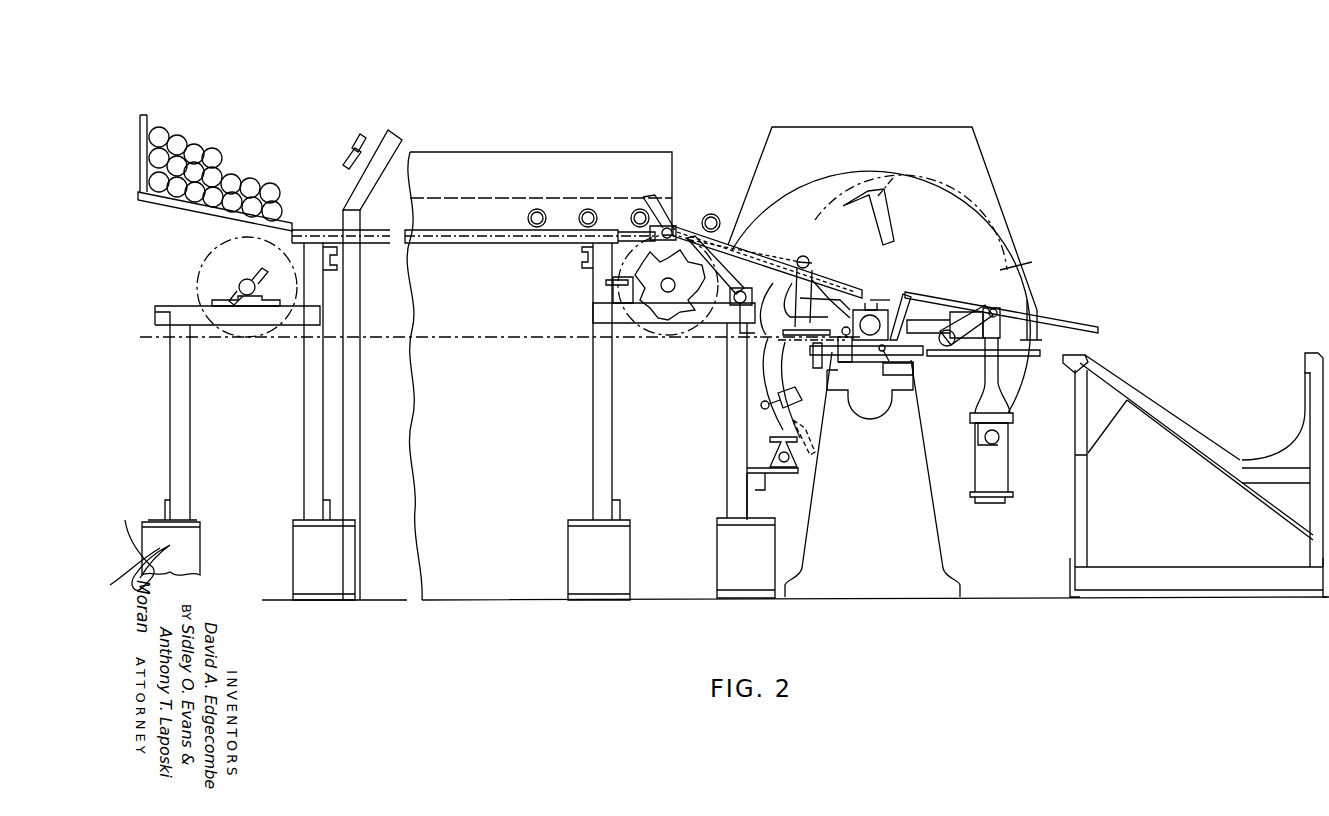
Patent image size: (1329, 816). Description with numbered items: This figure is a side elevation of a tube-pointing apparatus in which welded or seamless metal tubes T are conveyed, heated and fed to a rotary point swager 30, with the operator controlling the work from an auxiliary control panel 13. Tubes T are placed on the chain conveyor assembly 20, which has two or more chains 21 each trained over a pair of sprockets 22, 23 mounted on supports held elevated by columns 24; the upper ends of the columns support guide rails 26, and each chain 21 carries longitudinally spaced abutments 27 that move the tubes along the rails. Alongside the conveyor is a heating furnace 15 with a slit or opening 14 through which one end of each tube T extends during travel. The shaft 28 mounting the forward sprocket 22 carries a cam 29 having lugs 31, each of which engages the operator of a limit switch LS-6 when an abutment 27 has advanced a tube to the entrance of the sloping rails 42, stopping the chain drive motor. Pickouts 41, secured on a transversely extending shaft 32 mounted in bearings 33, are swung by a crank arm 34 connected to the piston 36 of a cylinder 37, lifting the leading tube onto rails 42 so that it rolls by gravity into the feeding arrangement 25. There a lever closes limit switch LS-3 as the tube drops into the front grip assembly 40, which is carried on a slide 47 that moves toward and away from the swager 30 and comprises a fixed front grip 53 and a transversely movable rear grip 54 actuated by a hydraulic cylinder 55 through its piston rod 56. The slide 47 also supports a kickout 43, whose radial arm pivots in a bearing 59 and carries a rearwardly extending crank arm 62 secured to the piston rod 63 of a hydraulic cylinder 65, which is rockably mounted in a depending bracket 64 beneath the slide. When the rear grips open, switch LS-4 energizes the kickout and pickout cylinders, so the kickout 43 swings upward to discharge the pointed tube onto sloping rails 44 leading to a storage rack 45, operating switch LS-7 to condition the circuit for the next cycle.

The tube T is at (170, 150).
The auxiliary control panel 13 is at (400, 153).
The opening 14 is at (470, 212).
The heating furnace 15 is at (567, 162).
The chain conveyor assembly 20 is at (518, 325).
The chain 21 is at (468, 339).
The sprocket 22 is at (690, 326).
The sprocket 23 is at (208, 256).
The column 24 is at (305, 412).
The feeding arrangement 25 is at (893, 294).
The guide rail 26 is at (440, 245).
The abutment 27 is at (528, 228).
The shaft 28 is at (666, 294).
The cam 29 is at (637, 292).
The rotary point swager 30 is at (972, 165).
The lug 31 is at (663, 237).
The shaft 32 is at (765, 262).
The bearing 33 is at (748, 268).
The crank arm 34 is at (806, 258).
The piston 36 is at (805, 303).
The cylinder 37 is at (810, 420).
The front grip assembly 40 is at (905, 305).
The pickout 41 is at (742, 270).
The sloping rail 42 is at (812, 283).
The kickout 43 is at (773, 353).
The sloping rail 44 is at (1062, 316).
The storage rack 45 is at (1197, 443).
The slide 47 is at (1043, 352).
The fixed front grip 53 is at (891, 292).
The rear grip 54 is at (928, 327).
The hydraulic cylinder 55 is at (1012, 280).
The piston rod 56 is at (930, 335).
The bearing 59 is at (1000, 315).
The crank arm 62 is at (966, 326).
The piston rod 63 is at (997, 365).
The depending bracket 64 is at (975, 395).
The hydraulic cylinder 65 is at (1003, 462).
The limit switch LS-3 is at (902, 368).
The limit switch LS-4 is at (843, 364).
The limit switch LS-6 is at (613, 290).
The limit switch LS-7 is at (780, 395).